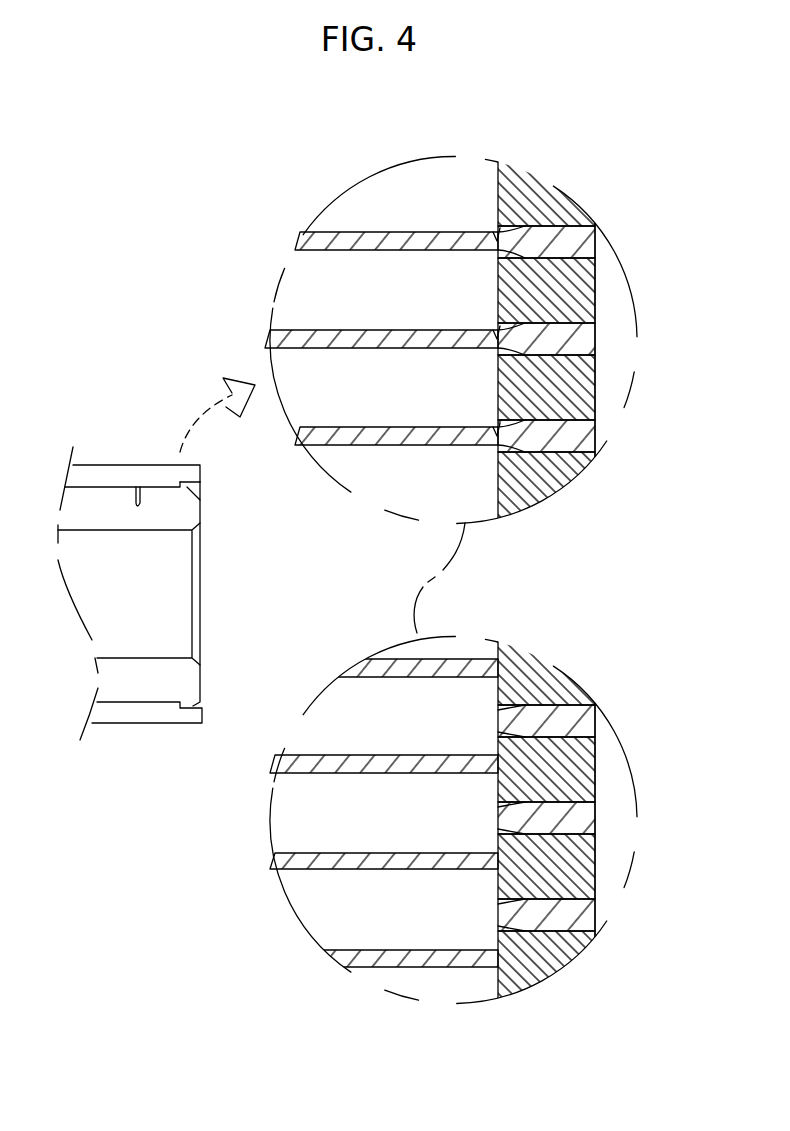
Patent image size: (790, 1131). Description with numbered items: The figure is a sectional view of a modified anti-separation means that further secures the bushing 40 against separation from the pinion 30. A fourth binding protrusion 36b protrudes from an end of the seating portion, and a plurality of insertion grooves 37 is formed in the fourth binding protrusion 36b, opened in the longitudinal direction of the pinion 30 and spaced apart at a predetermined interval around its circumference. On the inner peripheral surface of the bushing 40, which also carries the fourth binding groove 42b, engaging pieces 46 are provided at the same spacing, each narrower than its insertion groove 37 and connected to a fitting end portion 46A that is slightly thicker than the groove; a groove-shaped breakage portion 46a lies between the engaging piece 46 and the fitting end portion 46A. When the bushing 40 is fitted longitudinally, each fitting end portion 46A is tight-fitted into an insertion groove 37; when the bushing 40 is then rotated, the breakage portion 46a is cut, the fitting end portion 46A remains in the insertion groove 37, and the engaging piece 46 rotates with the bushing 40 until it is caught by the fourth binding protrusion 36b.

The pinion 30 is at (97, 522).
The bushing 40 is at (108, 464).
The fourth binding groove 42b is at (201, 483).
The engaging piece 46 is at (340, 337).
The breakage portion 46a is at (497, 336).
The fitting end portion 46A is at (582, 343).
The fourth binding protrusion 36b is at (562, 278).
The insertion groove 37 is at (550, 335).